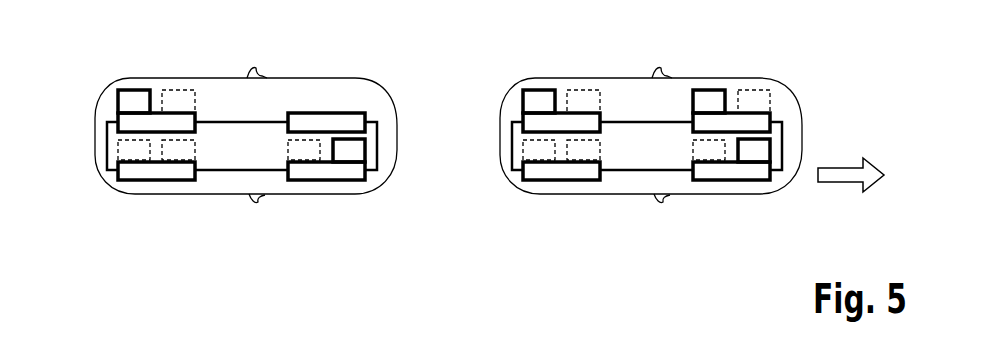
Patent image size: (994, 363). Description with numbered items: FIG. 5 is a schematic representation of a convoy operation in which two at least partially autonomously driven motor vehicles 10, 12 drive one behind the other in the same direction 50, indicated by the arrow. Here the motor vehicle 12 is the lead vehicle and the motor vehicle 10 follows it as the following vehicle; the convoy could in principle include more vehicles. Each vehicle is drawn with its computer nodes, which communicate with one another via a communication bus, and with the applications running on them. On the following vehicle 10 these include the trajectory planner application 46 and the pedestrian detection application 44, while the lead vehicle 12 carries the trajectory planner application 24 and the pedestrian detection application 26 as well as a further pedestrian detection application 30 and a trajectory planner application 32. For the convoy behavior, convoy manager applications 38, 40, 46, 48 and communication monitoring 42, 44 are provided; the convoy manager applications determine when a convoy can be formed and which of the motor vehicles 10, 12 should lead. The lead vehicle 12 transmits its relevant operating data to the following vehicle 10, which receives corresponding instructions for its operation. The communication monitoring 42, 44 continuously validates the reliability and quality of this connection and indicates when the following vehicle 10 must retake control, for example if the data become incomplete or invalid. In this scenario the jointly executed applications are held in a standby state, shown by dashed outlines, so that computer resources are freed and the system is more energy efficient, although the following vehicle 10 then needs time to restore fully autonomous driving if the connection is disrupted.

The motor vehicle 10 is at (118, 86).
The motor vehicle 12 is at (523, 86).
The trajectory planner application 24 is at (535, 89).
The pedestrian detection application 26 is at (582, 90).
The pedestrian detection application 30 is at (589, 152).
The trajectory planner application 32 is at (752, 90).
The convoy manager application 38 is at (710, 90).
The convoy manager application 40 is at (709, 152).
The communication monitoring 42 is at (366, 150).
The communication monitoring 44 is at (177, 90).
The convoy manager application 46 is at (130, 89).
The convoy manager application 48 is at (118, 150).
The direction 50 is at (858, 184).